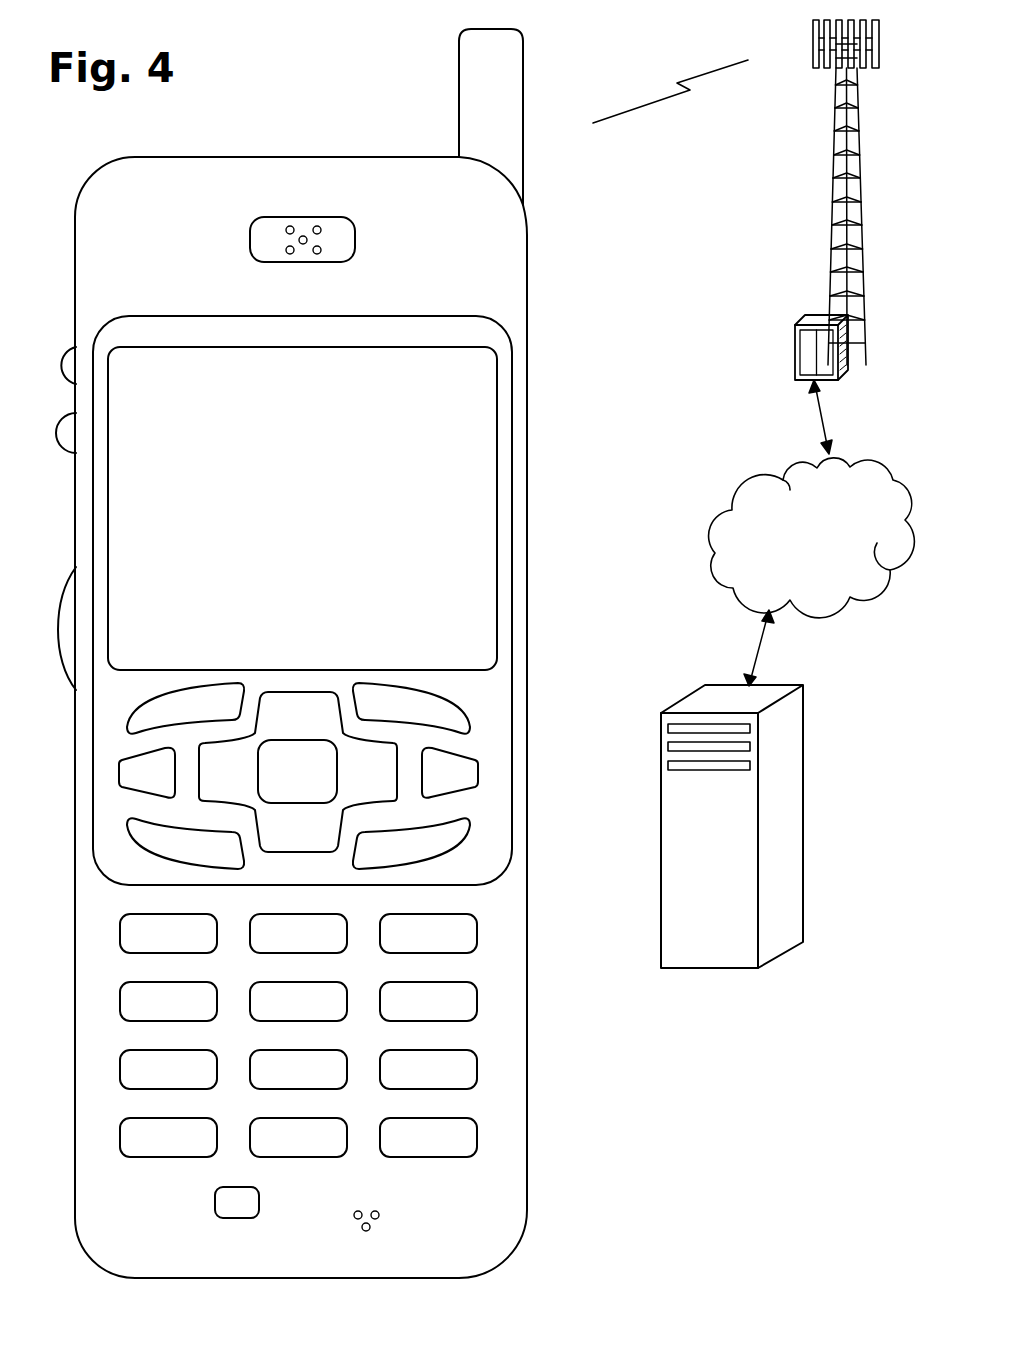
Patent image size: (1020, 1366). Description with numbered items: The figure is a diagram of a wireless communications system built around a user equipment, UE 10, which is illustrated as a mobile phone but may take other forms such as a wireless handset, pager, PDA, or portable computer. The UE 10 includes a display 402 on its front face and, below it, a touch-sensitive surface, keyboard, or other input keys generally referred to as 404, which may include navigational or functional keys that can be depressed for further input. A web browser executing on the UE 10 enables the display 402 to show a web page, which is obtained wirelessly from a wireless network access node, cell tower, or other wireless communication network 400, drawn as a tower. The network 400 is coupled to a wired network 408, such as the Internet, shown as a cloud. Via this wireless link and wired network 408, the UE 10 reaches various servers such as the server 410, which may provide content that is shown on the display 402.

The user equipment 10 is at (326, 669).
The wireless communication network 400 is at (830, 215).
The display 402 is at (508, 362).
The input keys 404 is at (535, 678).
The wired network 408 is at (727, 589).
The server 410 is at (704, 970).